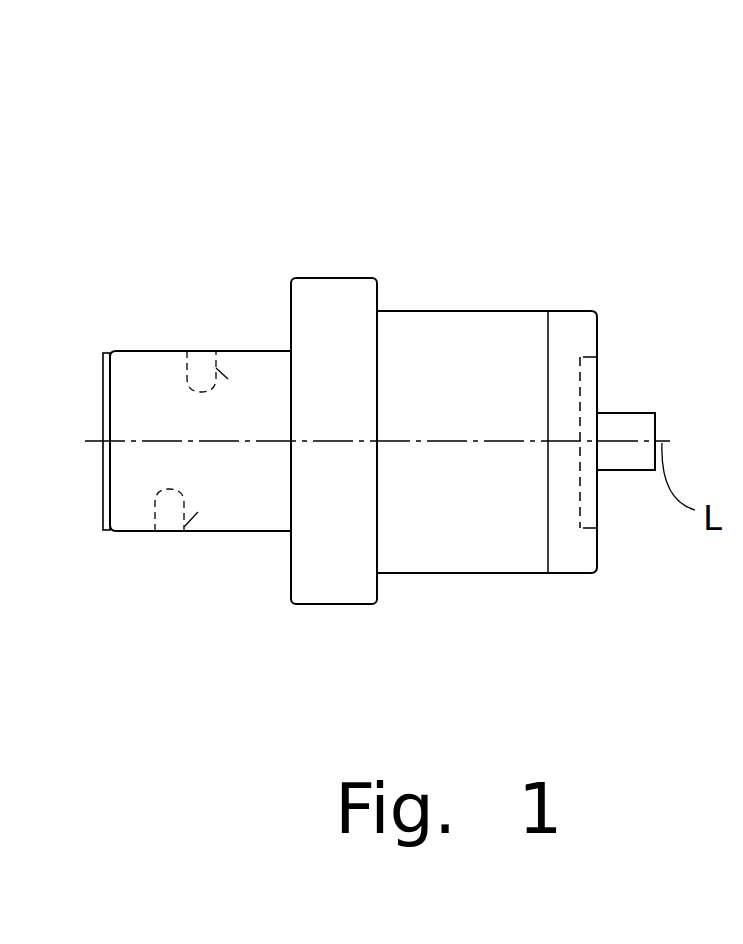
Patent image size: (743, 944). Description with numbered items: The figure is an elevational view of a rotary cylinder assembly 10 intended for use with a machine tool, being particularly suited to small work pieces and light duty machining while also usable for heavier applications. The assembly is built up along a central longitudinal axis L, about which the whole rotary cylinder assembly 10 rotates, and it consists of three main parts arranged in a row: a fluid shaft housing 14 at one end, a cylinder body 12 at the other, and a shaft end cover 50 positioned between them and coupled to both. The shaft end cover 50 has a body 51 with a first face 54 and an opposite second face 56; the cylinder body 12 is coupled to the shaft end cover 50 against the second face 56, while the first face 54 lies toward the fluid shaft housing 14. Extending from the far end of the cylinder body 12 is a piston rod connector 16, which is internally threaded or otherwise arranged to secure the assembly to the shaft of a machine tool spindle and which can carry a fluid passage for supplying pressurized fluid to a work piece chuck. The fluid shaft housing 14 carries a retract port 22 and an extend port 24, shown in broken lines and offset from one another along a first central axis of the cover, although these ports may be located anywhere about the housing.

The rotary cylinder assembly 10 is at (278, 215).
The cylinder body 12 is at (498, 308).
The fluid shaft housing 14 is at (143, 350).
The piston rod connector 16 is at (623, 408).
The retract port 22 is at (238, 383).
The extend port 24 is at (215, 512).
The shaft end cover 50 is at (343, 275).
The body 51 is at (328, 588).
The first face 54 is at (288, 571).
The second face 56 is at (378, 583).